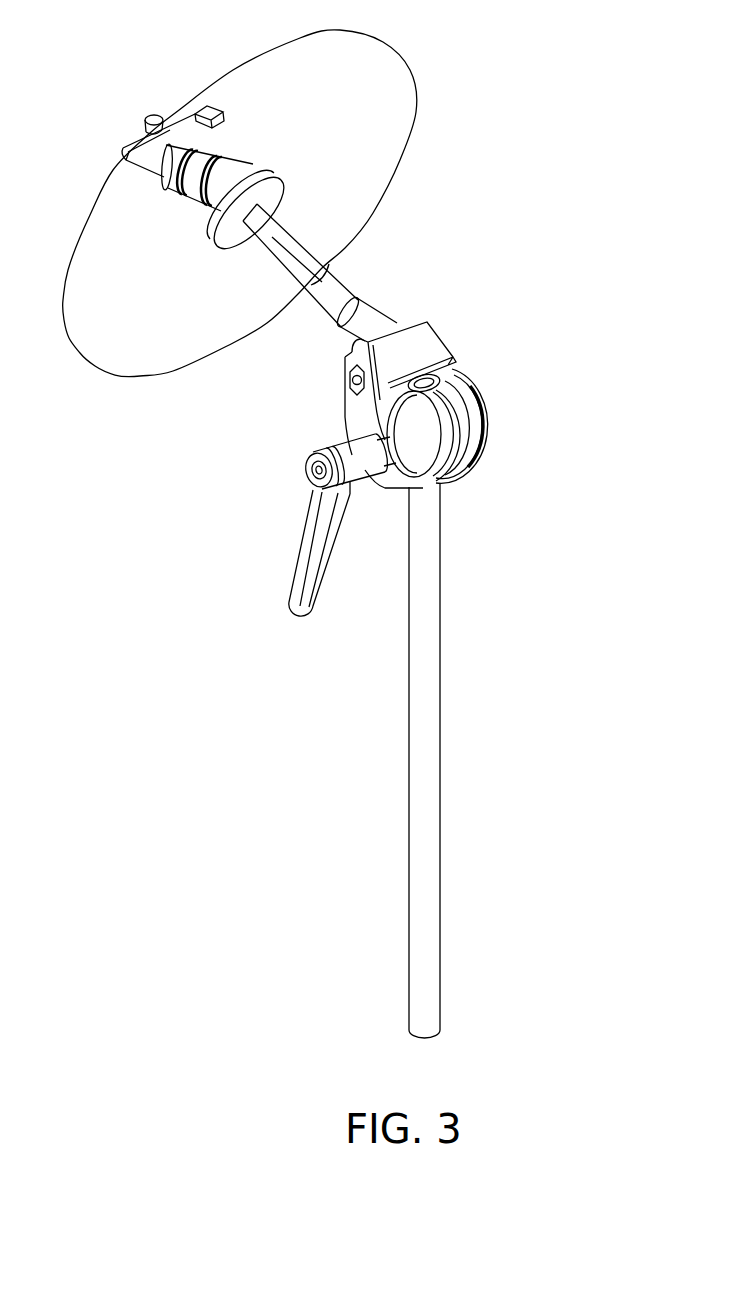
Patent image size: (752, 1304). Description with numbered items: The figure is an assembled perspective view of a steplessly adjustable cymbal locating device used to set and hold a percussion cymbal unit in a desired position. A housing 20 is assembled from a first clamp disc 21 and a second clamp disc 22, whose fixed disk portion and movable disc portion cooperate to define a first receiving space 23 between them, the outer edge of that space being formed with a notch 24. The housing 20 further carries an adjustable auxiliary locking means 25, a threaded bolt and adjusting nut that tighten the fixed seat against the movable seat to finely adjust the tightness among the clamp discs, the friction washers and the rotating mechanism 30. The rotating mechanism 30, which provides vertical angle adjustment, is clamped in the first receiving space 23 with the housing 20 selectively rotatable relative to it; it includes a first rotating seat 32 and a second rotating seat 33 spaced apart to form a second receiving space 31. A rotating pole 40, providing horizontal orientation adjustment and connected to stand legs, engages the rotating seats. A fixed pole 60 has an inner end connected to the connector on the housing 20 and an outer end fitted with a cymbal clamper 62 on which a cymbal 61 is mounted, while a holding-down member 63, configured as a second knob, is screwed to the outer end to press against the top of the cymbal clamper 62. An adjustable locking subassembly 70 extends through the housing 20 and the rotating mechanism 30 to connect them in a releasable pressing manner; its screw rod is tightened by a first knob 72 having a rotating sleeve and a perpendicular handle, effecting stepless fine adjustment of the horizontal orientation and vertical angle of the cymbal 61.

The housing 20 is at (417, 323).
The first clamp disc 21 is at (367, 420).
The second clamp disc 22 is at (483, 455).
The first receiving space 23 is at (450, 500).
The notch 24 is at (448, 387).
The adjustable auxiliary locking means 25 is at (352, 385).
The rotating mechanism 30 is at (492, 417).
The second receiving space 31 is at (470, 427).
The first rotating seat 32 is at (457, 477).
The second rotating seat 33 is at (451, 394).
The rotating pole 40 is at (440, 747).
The fixed pole 60 is at (302, 242).
The cymbal 61 is at (398, 160).
The cymbal clamper 62 is at (268, 157).
The holding-down member 63 is at (137, 139).
The adjustable locking subassembly 70 is at (278, 506).
The first knob 72 is at (300, 543).